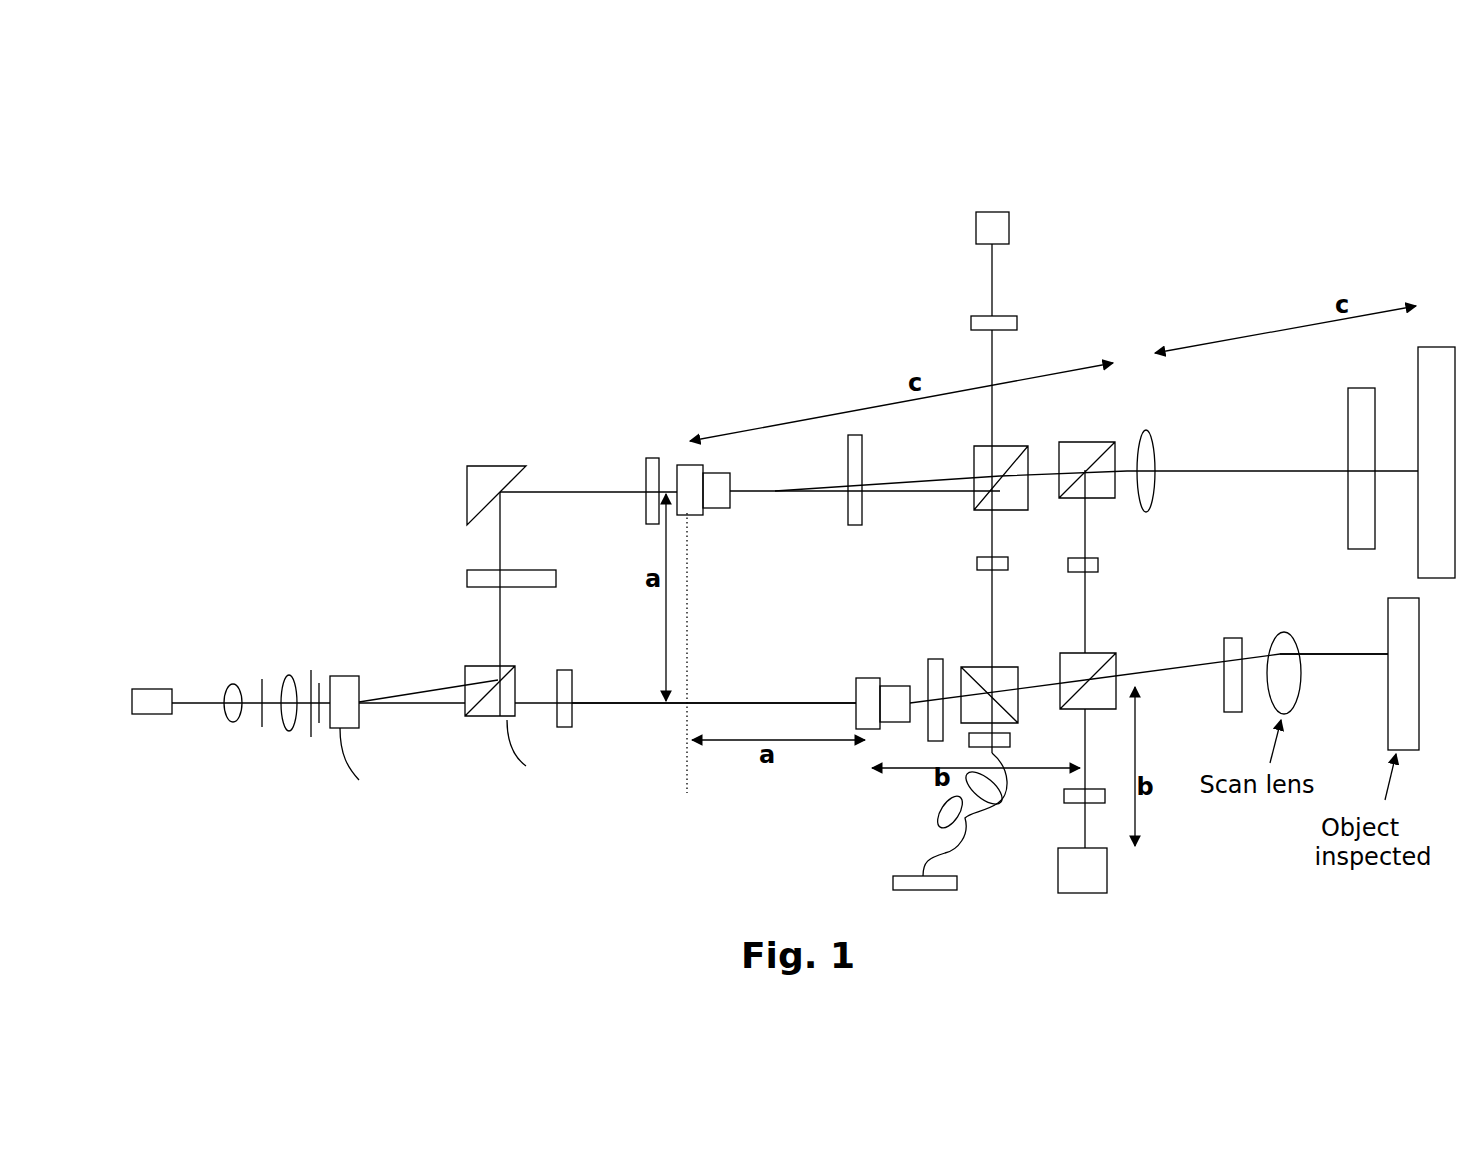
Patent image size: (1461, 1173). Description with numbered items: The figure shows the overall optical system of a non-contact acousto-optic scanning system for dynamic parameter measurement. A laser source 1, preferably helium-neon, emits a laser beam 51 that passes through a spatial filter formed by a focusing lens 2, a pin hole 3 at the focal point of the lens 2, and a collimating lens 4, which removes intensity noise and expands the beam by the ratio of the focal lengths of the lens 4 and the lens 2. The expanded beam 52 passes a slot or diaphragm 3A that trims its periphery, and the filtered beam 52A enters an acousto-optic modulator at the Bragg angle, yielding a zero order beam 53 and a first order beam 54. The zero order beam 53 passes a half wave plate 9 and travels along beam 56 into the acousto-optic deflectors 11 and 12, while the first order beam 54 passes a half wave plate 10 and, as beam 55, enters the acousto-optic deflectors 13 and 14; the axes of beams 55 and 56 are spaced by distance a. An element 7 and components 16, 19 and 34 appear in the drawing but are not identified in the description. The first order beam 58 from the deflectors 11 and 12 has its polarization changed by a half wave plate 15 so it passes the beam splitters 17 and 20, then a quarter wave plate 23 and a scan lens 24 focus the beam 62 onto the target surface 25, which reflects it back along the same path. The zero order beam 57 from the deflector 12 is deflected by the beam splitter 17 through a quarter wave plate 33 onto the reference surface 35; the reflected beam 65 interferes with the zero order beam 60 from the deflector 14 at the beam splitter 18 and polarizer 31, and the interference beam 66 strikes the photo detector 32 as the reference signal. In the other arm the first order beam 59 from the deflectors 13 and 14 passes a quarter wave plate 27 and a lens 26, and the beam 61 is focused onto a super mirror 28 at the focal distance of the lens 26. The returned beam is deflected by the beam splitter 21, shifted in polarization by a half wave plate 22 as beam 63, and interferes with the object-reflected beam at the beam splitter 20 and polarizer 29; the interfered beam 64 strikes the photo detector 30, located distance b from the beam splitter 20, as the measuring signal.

The laser source 1 is at (145, 714).
The focusing lens 2 is at (231, 684).
The pin hole 3 is at (262, 730).
The slot or diaphragm 3A is at (311, 738).
The collimating or focusing lens 4 is at (288, 672).
The prism 7 is at (502, 465).
The wave plate 9 is at (565, 670).
The wave plate 10 is at (638, 471).
The acousto optic deflector 11 is at (865, 678).
The acousto optic deflector 12 is at (887, 685).
The acousto optic deflector 13 is at (688, 468).
The acousto optic deflector 14 is at (720, 510).
The wave plate 15 is at (933, 657).
The optical element 16 is at (855, 527).
The beam splitter 17 is at (1005, 662).
The beam splitter 18 is at (1005, 443).
The optical element 19 is at (977, 565).
The beam splitter 20 is at (1100, 650).
The beam splitter 21 is at (1075, 442).
The half wave plate 22 is at (1098, 563).
The quarter wave plate 23 is at (1232, 636).
The scan lens 24 is at (1284, 632).
The target surface 25 is at (1381, 709).
The collimating or focusing lens 26 is at (1140, 425).
The quarter wave plate 27 is at (1363, 380).
The super mirror 28 is at (1433, 353).
The polarizer 29 is at (1062, 795).
The photo detector 30 is at (1058, 862).
The polarizer 31 is at (1012, 310).
The photo detector 32 is at (1010, 230).
The wave plate 33 is at (1012, 742).
The optical fiber with lenses 34 is at (940, 850).
The mirror or reference surface 35 is at (893, 878).
The laser beam 51 is at (196, 703).
The laser beam 52 is at (304, 698).
The filtered beam 52A is at (317, 700).
The zero order beam 53 is at (415, 705).
The first order beam 54 is at (403, 690).
The beam 55 is at (550, 490).
The beam 56 is at (763, 702).
The zero order beam 57 is at (920, 707).
The first order beam 58 is at (1163, 645).
The first order beam 59 is at (777, 485).
The zero order beam 60 is at (813, 492).
The beam 61 is at (1257, 463).
The beam 62 is at (1327, 653).
The beam 63 is at (1085, 533).
The interfered beam 64 is at (1083, 835).
The reflected beam 65 is at (987, 533).
The interference beam 66 is at (988, 292).